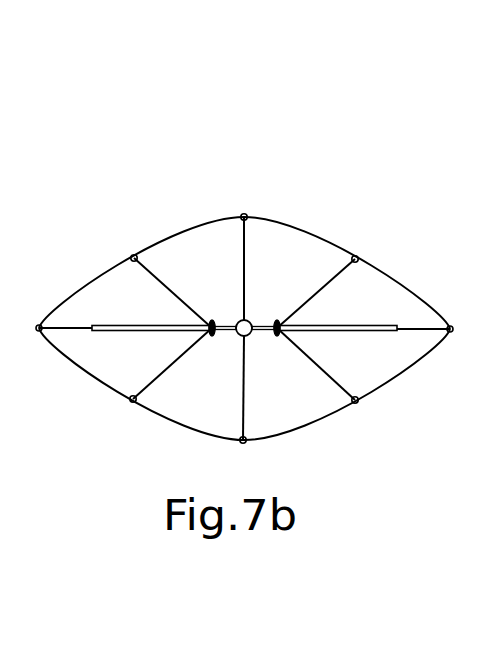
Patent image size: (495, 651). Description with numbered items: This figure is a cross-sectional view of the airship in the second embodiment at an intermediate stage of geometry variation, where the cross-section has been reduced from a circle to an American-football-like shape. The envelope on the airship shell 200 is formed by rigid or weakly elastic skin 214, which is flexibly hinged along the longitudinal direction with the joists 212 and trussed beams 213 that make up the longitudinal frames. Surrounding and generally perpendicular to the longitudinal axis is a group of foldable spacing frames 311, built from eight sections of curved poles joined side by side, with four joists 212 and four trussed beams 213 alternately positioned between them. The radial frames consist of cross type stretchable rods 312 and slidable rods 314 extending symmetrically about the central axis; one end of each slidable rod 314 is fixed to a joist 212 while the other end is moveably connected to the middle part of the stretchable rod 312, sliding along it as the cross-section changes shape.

The airship shell 200 is at (68, 243).
The joist 212 is at (134, 258).
The trussed beam 213 is at (244, 217).
The skin 214 is at (404, 280).
The foldable spacing frame 311 is at (408, 378).
The stretchable rod 312 is at (244, 272).
The slidable rod 314 is at (158, 380).